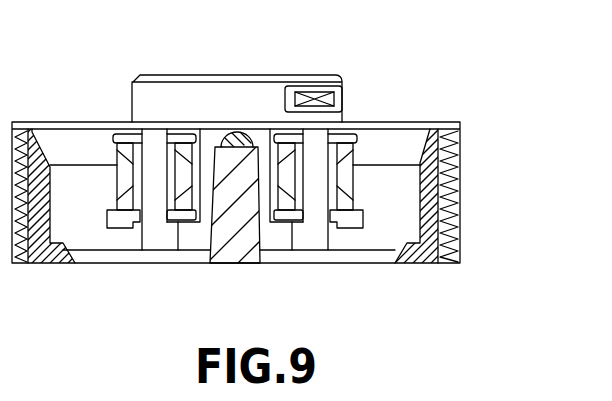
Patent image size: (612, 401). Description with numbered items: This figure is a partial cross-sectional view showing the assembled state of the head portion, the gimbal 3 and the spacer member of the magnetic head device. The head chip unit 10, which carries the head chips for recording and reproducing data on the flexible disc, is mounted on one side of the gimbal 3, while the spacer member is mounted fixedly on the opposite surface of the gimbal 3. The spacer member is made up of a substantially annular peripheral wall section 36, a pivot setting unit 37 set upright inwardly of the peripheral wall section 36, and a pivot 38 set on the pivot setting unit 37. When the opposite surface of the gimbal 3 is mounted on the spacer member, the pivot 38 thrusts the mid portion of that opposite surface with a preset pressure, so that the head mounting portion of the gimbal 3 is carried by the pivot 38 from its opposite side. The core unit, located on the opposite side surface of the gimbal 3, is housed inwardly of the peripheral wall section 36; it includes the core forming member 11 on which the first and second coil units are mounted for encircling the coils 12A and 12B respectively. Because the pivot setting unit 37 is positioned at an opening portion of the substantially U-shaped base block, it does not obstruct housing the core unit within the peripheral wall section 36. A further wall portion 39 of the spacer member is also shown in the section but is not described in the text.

The gimbal 3 is at (363, 125).
The head chip unit 10 is at (168, 97).
The core forming member 11 is at (155, 240).
The coil 12A is at (127, 165).
The coil 12B is at (350, 158).
The peripheral wall section 36 is at (460, 248).
The pivot setting unit 37 is at (230, 251).
The pivot 38 is at (238, 134).
The side wall 39 is at (460, 174).